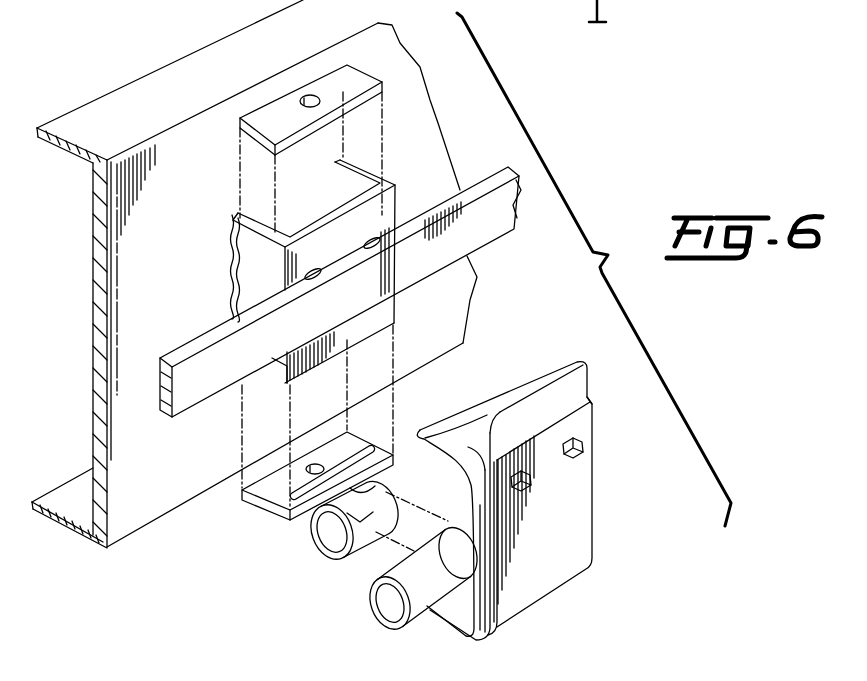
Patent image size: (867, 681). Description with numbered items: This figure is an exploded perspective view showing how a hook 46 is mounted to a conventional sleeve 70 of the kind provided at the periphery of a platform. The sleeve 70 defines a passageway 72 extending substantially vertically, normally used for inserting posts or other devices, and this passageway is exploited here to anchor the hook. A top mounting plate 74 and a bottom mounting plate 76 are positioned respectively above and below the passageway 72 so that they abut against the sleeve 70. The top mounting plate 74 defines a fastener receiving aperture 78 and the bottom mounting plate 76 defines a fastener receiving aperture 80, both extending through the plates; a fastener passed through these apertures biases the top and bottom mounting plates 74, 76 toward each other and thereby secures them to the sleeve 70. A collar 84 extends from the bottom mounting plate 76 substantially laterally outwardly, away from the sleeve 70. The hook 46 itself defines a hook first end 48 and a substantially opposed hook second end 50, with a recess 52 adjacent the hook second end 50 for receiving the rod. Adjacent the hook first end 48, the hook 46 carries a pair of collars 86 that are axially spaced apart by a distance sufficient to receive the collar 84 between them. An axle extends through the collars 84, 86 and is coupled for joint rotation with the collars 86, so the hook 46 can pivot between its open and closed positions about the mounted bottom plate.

The hook 46 is at (602, 467).
The hook first end 48 is at (532, 476).
The hook second end 50 is at (574, 579).
The recess 52 is at (450, 450).
The sleeve 70 is at (254, 267).
The passageway 72 is at (250, 215).
The top mounting plate 74 is at (384, 81).
The bottom mounting plate 76 is at (258, 502).
The fastener receiving aperture 78 is at (314, 101).
The fastener receiving aperture 80 is at (304, 468).
The collar 84 is at (333, 556).
The collars 86 is at (372, 590).